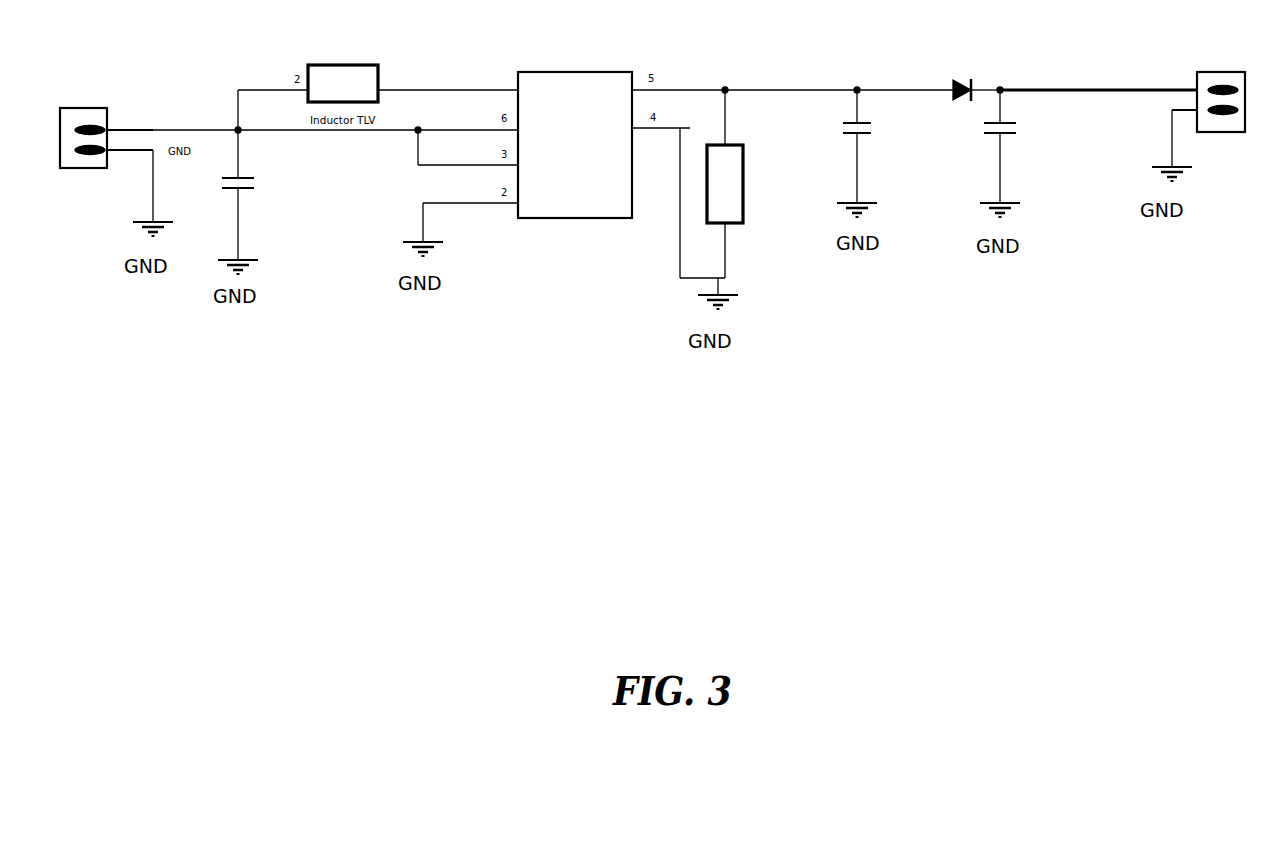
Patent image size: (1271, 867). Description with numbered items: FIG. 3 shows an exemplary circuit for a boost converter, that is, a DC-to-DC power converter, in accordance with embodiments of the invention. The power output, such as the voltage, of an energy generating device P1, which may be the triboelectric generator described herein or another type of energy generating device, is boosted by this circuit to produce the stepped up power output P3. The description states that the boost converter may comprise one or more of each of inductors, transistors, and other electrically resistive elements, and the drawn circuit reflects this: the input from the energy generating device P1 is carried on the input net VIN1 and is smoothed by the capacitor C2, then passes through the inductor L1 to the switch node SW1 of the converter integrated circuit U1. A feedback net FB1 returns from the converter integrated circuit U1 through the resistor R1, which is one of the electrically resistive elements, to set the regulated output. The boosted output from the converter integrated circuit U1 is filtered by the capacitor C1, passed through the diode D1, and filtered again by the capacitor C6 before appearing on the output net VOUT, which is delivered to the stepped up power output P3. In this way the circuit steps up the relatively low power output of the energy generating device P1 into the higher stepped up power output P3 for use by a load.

The energy generating device P1 is at (106, 121).
The input voltage net VIN1 is at (195, 118).
The input capacitor C2 is at (252, 202).
The inductor L1 is at (343, 68).
The switch node net SW1 is at (448, 82).
The boost converter IC U1 is at (575, 126).
The feedback net FB1 is at (678, 203).
The feedback resistor R1 is at (756, 184).
The output capacitor C1 is at (883, 153).
The output diode D1 is at (975, 72).
The output capacitor C6 is at (1028, 152).
The output voltage net VOUT is at (1098, 72).
The stepped up power output P3 is at (1208, 84).